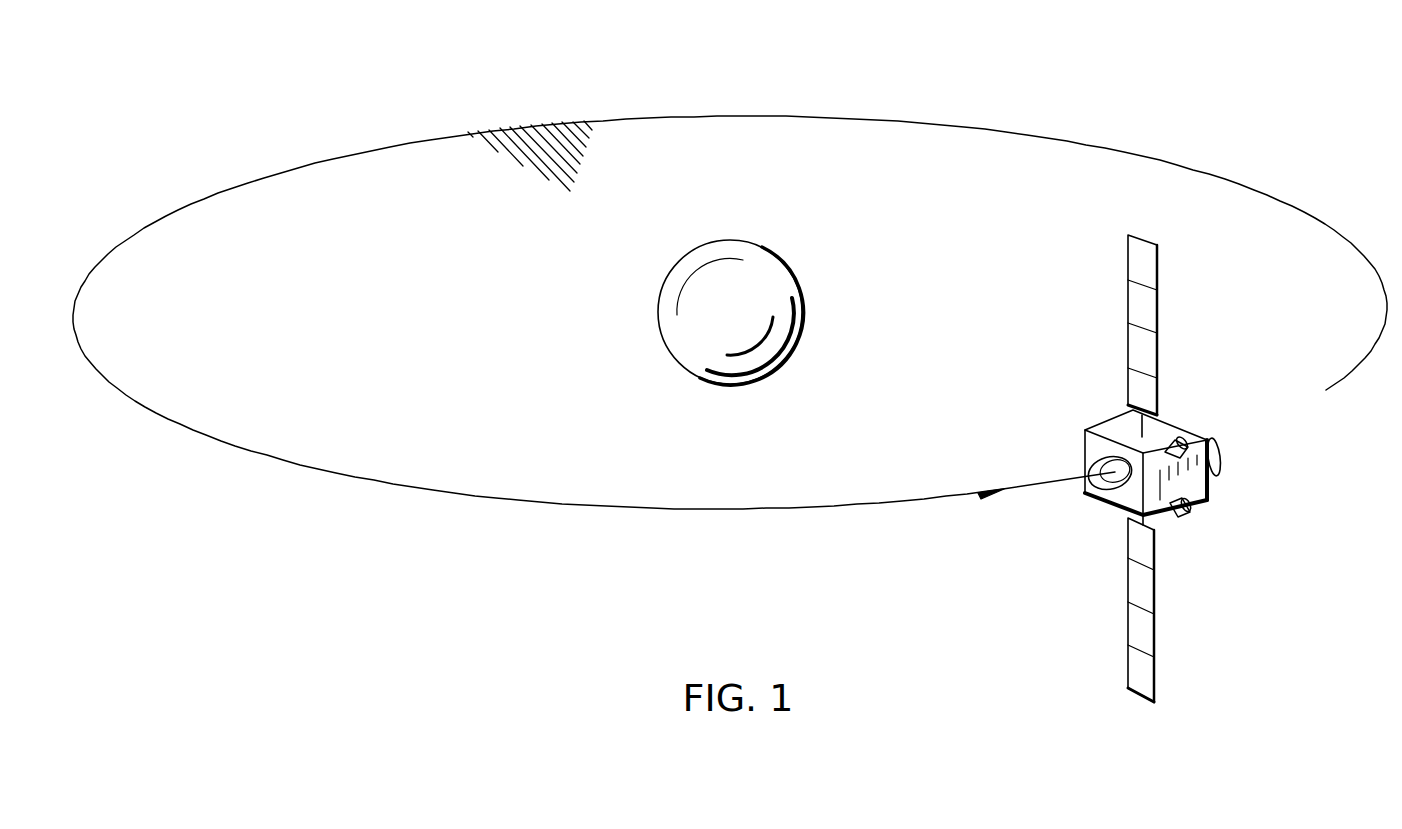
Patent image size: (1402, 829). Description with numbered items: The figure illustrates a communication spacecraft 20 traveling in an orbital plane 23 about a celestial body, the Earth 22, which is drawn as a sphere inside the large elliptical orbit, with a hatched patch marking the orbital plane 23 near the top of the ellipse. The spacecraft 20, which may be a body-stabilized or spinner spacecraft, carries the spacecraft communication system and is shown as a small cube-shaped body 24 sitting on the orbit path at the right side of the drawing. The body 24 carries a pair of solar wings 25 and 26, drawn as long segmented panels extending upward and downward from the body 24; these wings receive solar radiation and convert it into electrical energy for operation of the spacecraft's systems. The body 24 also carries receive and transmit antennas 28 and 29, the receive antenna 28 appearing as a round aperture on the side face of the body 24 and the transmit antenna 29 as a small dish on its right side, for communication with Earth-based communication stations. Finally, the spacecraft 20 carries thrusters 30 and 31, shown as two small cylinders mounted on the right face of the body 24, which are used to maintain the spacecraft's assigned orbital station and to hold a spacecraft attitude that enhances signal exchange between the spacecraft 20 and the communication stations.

The spacecraft 20 is at (1080, 505).
The Earth 22 is at (706, 243).
The orbital plane 23 is at (540, 137).
The body 24 is at (1093, 423).
The solar wing 25 is at (1128, 332).
The solar wing 26 is at (1128, 618).
The receive antenna 28 is at (1085, 457).
The transmit antenna 29 is at (1222, 462).
The thruster 30 is at (1198, 433).
The thruster 31 is at (1197, 513).